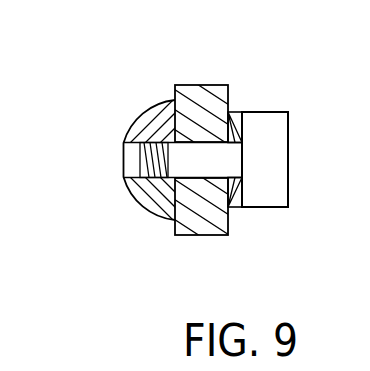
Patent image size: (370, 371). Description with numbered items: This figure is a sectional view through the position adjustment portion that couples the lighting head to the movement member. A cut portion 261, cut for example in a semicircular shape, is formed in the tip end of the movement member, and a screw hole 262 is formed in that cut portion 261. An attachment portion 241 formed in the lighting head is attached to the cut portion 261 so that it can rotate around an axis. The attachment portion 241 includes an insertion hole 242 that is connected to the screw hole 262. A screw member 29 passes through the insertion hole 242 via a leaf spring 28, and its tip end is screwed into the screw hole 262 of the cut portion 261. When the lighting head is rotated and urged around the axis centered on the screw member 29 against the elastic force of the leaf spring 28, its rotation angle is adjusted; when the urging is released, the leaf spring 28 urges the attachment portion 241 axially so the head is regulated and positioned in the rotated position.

The leaf spring 28 is at (229, 110).
The screw member 29 is at (269, 196).
The attachment portion 241 is at (200, 93).
The insertion hole 242 is at (197, 176).
The cut portion 261 is at (137, 118).
The screw hole 262 is at (123, 168).